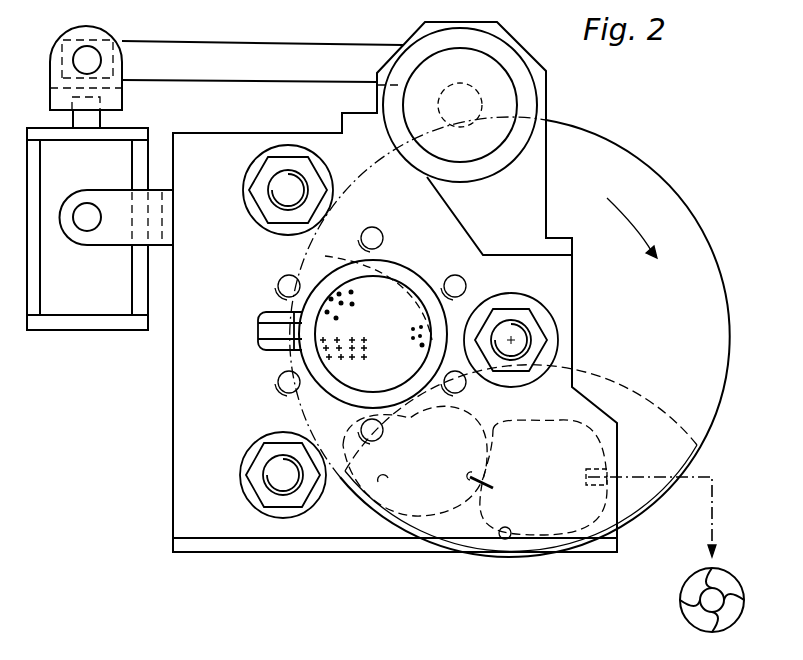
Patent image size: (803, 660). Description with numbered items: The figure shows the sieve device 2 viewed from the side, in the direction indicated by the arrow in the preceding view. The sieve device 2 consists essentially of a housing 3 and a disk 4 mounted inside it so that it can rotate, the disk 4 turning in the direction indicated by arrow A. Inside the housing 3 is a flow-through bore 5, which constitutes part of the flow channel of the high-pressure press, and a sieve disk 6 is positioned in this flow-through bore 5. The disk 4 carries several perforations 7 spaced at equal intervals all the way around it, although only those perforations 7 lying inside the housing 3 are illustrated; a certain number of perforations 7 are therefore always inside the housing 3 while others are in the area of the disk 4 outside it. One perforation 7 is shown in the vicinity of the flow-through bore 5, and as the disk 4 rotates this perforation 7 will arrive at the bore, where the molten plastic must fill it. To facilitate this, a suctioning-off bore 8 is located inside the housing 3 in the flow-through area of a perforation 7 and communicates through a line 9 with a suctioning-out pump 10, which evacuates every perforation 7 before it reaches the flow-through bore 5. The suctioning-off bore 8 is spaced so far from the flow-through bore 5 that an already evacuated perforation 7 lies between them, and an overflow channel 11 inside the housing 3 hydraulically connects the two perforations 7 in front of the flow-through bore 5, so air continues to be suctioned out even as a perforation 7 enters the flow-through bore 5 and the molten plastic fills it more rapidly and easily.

The sieve device 2 is at (128, 383).
The housing 3 is at (186, 466).
The disk 4 is at (590, 152).
The flow-through bore 5 is at (360, 392).
The sieve disk 6 is at (342, 354).
The perforations 7 is at (395, 496).
The suctioning-off bore 8 is at (593, 475).
The line 9 is at (712, 516).
The suctioning-out pump 10 is at (681, 587).
The overflow channel 11 is at (493, 490).